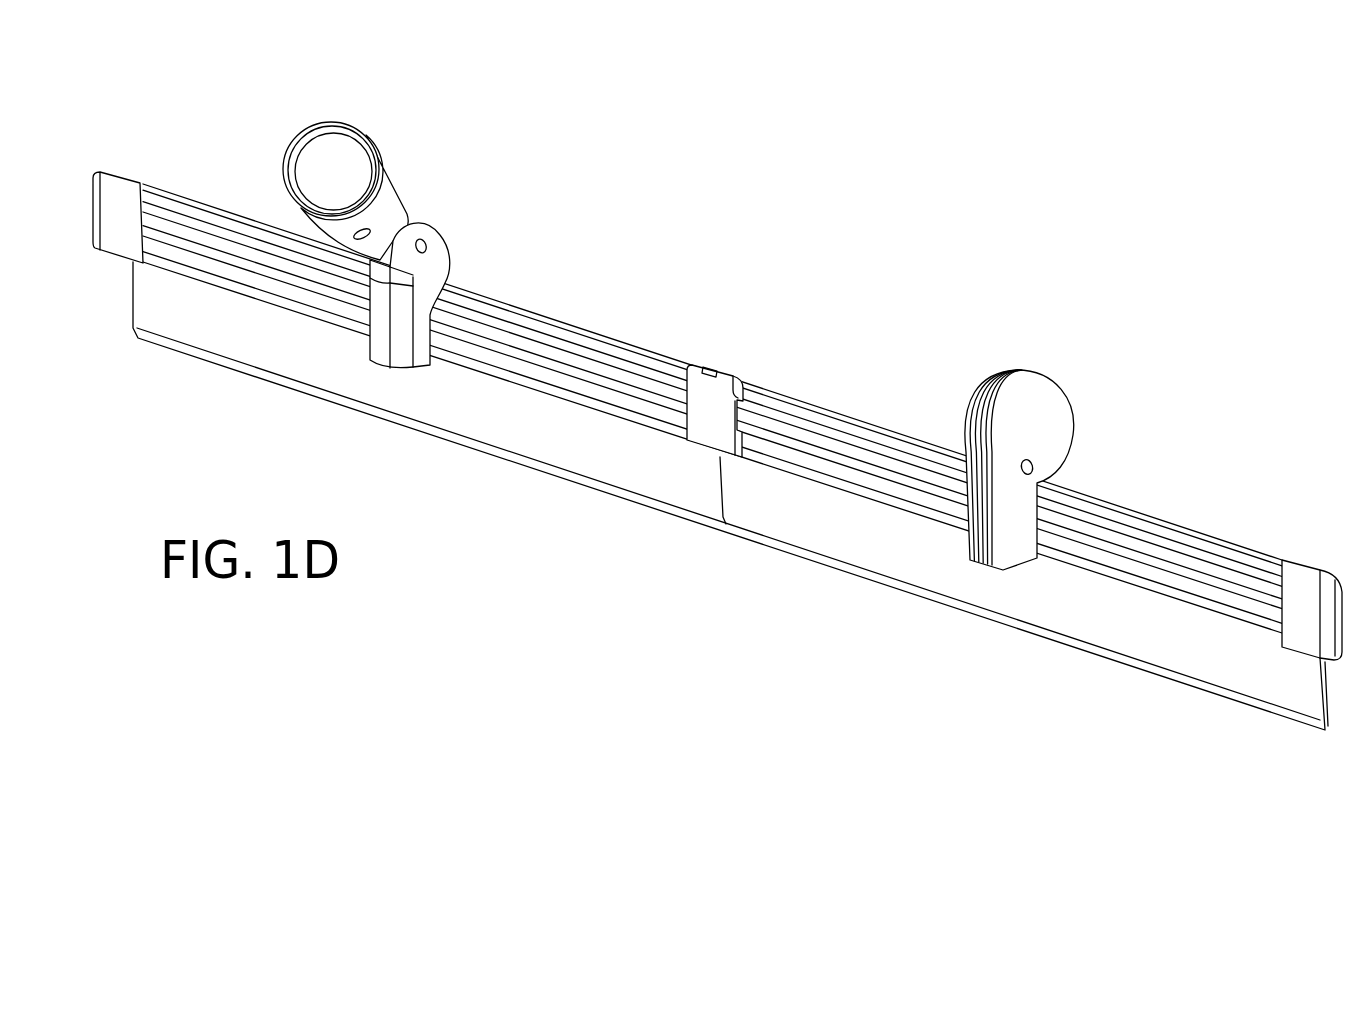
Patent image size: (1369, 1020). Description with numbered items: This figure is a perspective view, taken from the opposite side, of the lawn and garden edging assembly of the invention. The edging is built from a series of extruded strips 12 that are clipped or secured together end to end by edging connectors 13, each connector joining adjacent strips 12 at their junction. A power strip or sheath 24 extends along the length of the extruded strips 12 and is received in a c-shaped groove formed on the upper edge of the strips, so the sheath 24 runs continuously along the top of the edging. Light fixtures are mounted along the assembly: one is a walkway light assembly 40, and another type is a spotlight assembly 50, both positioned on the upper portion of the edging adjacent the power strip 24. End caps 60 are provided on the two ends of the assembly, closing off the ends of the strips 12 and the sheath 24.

The extruded strips 12 is at (593, 465).
The edging connectors 13 is at (726, 370).
The power strip or sheath 24 is at (837, 422).
The walkway light assembly 40 is at (1060, 417).
The spotlight assembly 50 is at (390, 182).
The end caps 60 is at (115, 182).